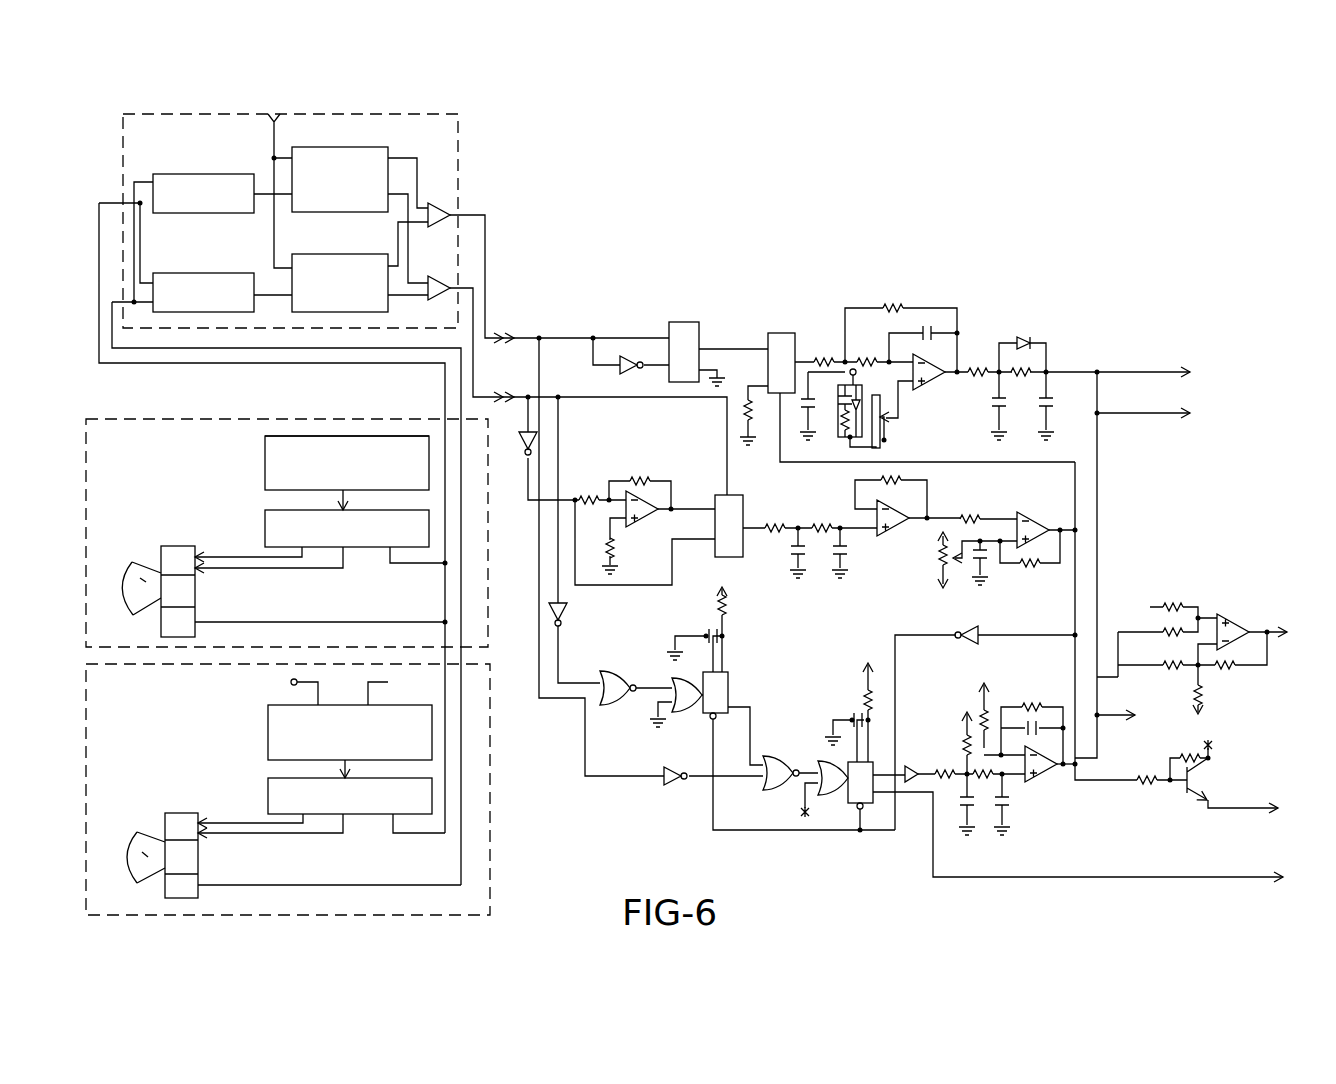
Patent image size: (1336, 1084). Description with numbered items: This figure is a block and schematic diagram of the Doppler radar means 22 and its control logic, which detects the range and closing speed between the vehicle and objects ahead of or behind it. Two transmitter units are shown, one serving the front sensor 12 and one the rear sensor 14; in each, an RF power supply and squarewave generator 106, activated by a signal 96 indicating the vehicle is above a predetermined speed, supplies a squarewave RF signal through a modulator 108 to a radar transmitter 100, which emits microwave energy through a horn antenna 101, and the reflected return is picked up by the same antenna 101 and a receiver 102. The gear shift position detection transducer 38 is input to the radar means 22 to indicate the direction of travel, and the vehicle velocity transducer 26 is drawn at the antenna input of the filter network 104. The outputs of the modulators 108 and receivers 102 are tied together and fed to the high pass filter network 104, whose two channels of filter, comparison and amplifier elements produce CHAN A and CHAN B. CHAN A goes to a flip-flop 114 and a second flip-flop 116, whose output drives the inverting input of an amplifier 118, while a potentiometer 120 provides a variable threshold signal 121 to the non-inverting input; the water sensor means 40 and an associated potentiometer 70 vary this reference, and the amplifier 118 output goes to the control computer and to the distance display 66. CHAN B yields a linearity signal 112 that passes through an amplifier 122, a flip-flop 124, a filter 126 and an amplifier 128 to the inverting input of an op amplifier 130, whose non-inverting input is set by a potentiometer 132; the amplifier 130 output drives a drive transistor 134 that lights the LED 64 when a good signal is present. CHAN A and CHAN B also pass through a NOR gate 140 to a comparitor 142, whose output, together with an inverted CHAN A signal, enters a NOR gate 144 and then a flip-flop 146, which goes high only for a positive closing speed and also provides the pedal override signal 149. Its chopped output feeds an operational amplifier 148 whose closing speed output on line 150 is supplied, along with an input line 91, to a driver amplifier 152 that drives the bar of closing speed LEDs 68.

The filter network 104 is at (123, 160).
The vehicle velocity sensing transducer 26 is at (274, 145).
The Doppler radar means 22 is at (190, 392).
The activation signal 96 is at (275, 436).
The RF power supply and squarewave generator 106 is at (265, 458).
The modulator 108 is at (265, 520).
The radar transmitter 100 is at (178, 546).
The horn antenna 101 is at (147, 565).
The receiver 102 is at (195, 620).
The front sensor 12 is at (138, 580).
The rear sensor 14 is at (145, 855).
The gear shift position detection transducer 38 is at (334, 689).
The flip-flop 114 is at (716, 303).
The second flip-flop 116 is at (790, 333).
The amplifier 118 is at (947, 383).
The potentiometer 120 is at (898, 418).
The variable threshold signal 121 is at (1097, 372).
The distance display 66 is at (1097, 413).
The water sensor means 40 is at (830, 445).
The potentiometer 70 is at (868, 448).
The amplifier 122 is at (640, 503).
The linearity signal 112 is at (528, 500).
The flip-flop 124 is at (730, 557).
The filter 126 is at (812, 524).
The amplifier 128 is at (888, 540).
The op amplifier 130 is at (1035, 522).
The potentiometer 132 is at (955, 562).
The input line 91 is at (1150, 607).
The driver amplifier 152 is at (1240, 653).
The closing speed LED's 68 is at (1280, 640).
The NOR gate 140 is at (625, 660).
The comparitor 142 is at (728, 675).
The NOR gate 144 is at (780, 760).
The flip-flop 146 is at (860, 810).
The operational amplifier 148 is at (1050, 785).
The output signal line 150 is at (1080, 764).
The drive transistor 134 is at (1185, 795).
The LED 64 is at (1280, 812).
The pedal override signal 149 is at (1020, 877).